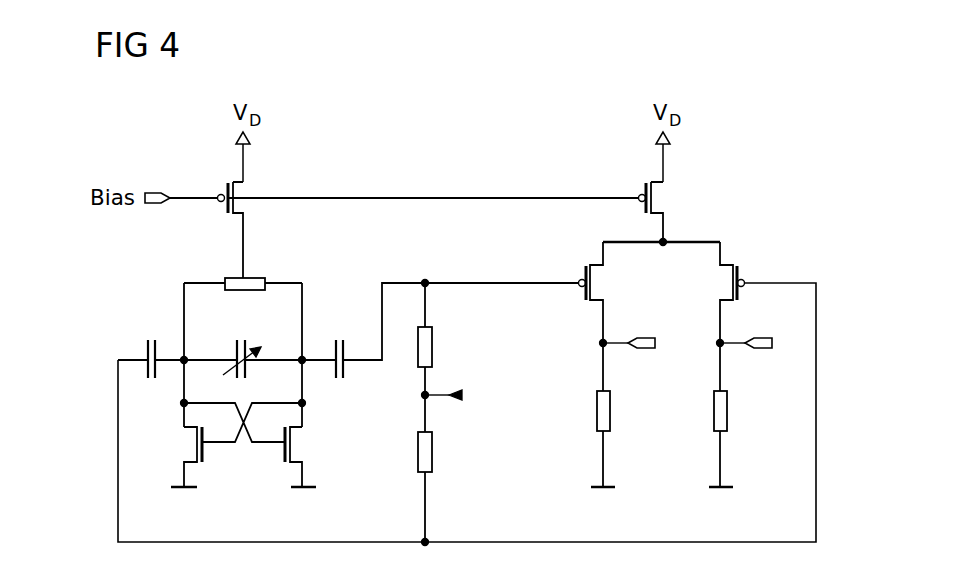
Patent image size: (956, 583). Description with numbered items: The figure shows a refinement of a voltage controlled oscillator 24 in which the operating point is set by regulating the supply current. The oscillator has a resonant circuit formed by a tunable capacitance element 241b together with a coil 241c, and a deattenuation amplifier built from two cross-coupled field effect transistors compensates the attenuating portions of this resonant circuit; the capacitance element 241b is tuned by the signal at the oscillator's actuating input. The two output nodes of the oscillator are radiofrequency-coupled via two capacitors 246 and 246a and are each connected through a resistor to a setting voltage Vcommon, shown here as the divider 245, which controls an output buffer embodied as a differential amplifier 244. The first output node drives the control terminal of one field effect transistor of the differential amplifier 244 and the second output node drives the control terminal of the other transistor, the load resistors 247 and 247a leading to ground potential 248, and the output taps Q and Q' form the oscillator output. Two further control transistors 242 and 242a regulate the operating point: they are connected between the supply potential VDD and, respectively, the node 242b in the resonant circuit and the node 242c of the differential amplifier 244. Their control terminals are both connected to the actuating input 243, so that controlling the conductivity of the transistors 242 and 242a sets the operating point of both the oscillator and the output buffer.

The voltage controlled oscillator 24 is at (192, 137).
The actuating input 243 is at (152, 190).
The control transistor 242 is at (238, 191).
The control transistor 242a is at (654, 195).
The node in the resonant circuit 242b is at (256, 278).
The node of the differential amplifier 242c is at (663, 248).
The tunable capacitance element 241b is at (237, 338).
The coil 241c is at (233, 278).
The differential amplifier 244 is at (738, 265).
The resistive voltage divider 245 is at (451, 408).
The capacitor 246 is at (150, 338).
The capacitor 246a is at (336, 338).
The load resistor 247 is at (612, 410).
The load resistor 247a is at (729, 410).
The ground potential 248 is at (308, 487).